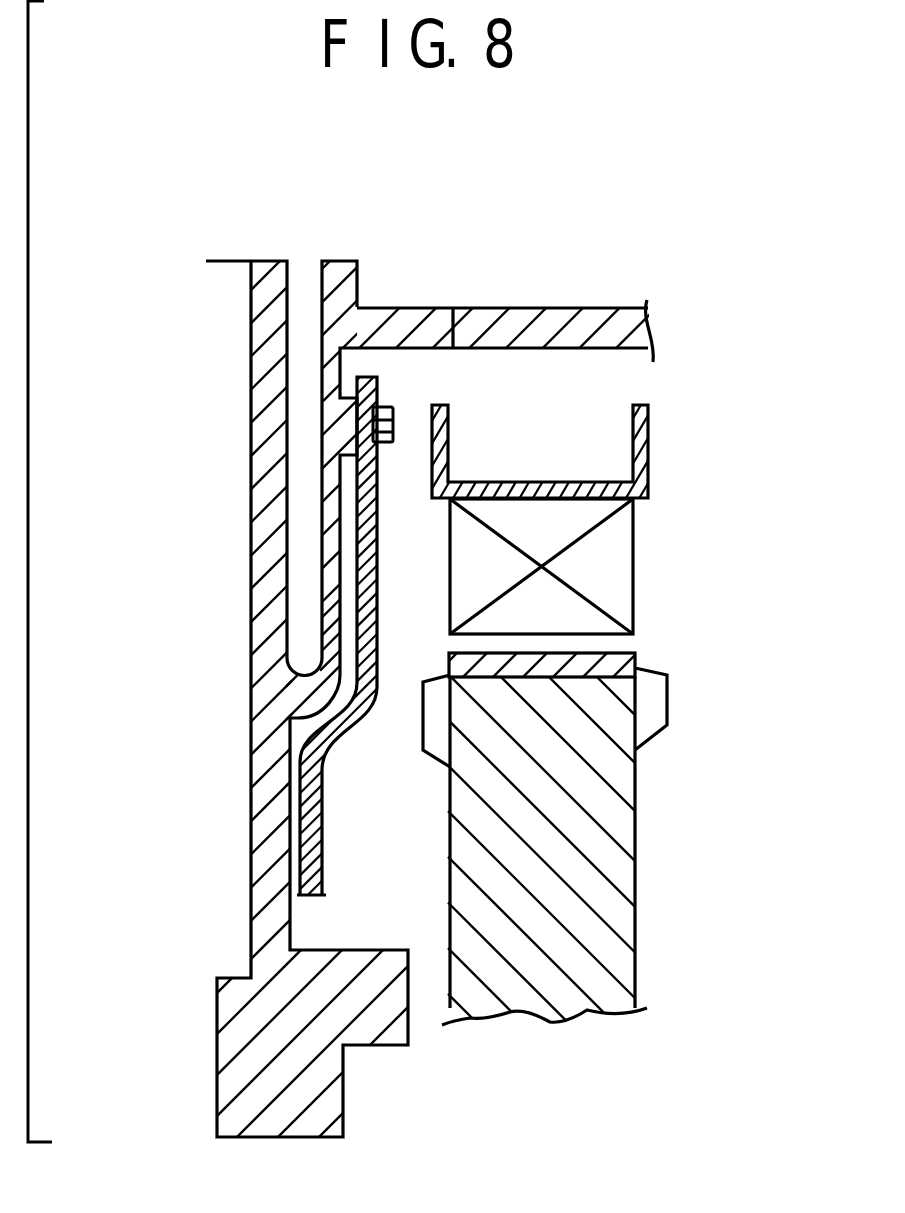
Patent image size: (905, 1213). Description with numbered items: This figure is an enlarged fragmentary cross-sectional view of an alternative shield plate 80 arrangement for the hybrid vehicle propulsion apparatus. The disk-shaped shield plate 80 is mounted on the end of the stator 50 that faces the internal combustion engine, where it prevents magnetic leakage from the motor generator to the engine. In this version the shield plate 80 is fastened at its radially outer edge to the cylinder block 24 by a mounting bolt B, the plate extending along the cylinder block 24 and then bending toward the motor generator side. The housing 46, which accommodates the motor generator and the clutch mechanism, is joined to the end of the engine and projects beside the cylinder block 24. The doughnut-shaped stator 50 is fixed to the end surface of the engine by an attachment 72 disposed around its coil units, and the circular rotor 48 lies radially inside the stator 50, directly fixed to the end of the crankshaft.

The cylinder block 24 is at (262, 467).
The housing 46 is at (560, 328).
The mounting bolt B is at (387, 407).
The shield plate 80 is at (310, 777).
The attachment 72 is at (648, 441).
The stator 50 is at (658, 559).
The rotor 48 is at (623, 837).